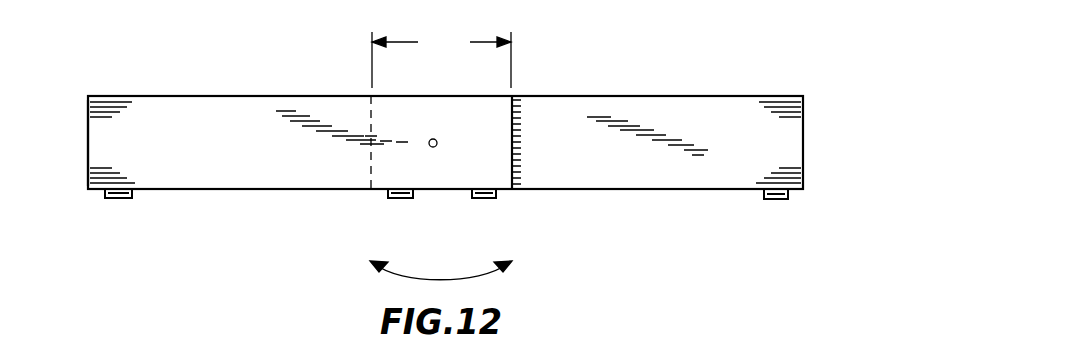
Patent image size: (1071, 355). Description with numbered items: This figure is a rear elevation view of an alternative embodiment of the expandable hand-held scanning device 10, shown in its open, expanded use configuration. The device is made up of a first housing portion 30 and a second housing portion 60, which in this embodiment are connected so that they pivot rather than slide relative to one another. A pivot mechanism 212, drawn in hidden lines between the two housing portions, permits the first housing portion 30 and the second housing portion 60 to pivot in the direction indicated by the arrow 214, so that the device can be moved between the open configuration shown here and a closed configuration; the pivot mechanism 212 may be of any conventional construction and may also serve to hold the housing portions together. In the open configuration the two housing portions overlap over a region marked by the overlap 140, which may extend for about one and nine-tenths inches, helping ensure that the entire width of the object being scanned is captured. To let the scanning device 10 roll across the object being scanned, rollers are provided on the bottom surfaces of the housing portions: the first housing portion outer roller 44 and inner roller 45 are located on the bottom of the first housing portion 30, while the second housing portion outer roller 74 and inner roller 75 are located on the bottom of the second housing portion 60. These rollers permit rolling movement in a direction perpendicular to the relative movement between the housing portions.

The hand-held scanning device 10 is at (673, 76).
The first housing portion 30 is at (803, 137).
The second housing portion 60 is at (88, 143).
The overlap 140 is at (441, 58).
The pivot mechanism 212 is at (437, 141).
The arrow 214 is at (427, 282).
The second housing portion outer roller 74 is at (119, 199).
The first housing portion inner roller 45 is at (395, 200).
The second housing portion inner roller 75 is at (485, 200).
The first housing portion outer roller 44 is at (775, 200).